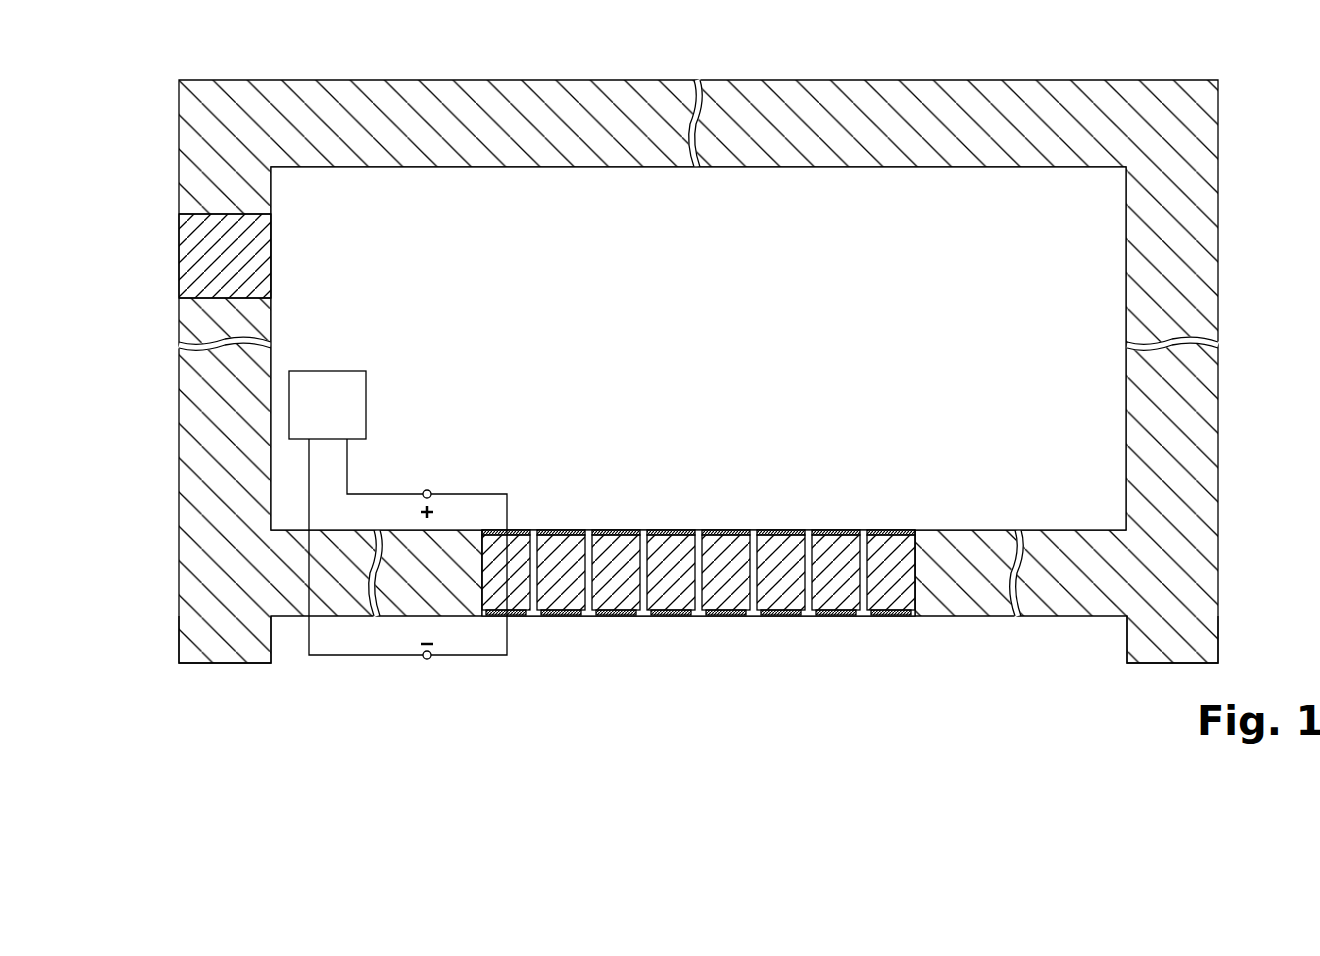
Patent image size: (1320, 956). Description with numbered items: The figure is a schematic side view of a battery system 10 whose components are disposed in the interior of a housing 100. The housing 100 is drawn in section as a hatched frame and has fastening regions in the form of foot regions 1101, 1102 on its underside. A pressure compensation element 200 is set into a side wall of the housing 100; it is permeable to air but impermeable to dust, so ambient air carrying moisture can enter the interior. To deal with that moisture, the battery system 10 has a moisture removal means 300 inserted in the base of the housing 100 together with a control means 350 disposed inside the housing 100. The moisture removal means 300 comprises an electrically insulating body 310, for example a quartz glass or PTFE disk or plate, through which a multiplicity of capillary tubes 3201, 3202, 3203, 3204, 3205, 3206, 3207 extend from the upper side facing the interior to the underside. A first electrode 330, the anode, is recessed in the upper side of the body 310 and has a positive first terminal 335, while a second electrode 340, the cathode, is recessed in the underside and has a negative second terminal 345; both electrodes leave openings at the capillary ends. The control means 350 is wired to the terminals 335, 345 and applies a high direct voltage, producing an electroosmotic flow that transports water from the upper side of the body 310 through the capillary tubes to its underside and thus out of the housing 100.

The battery system 10 is at (718, 49).
The housing 100 is at (265, 80).
The foot region 1101 is at (179, 632).
The foot region 1102 is at (1218, 633).
The pressure compensation element 200 is at (195, 252).
The moisture removal means 300 is at (663, 629).
The body 310 is at (727, 552).
The capillary tube 3201 is at (537, 530).
The capillary tube 3202 is at (590, 616).
The capillary tube 3203 is at (642, 530).
The capillary tube 3204 is at (700, 616).
The capillary tube 3205 is at (757, 530).
The capillary tube 3206 is at (809, 616).
The capillary tube 3207 is at (862, 530).
The first electrode 330 is at (702, 530).
The first terminal 335 is at (427, 490).
The second electrode 340 is at (727, 616).
The second terminal 345 is at (427, 659).
The control means 350 is at (327, 372).